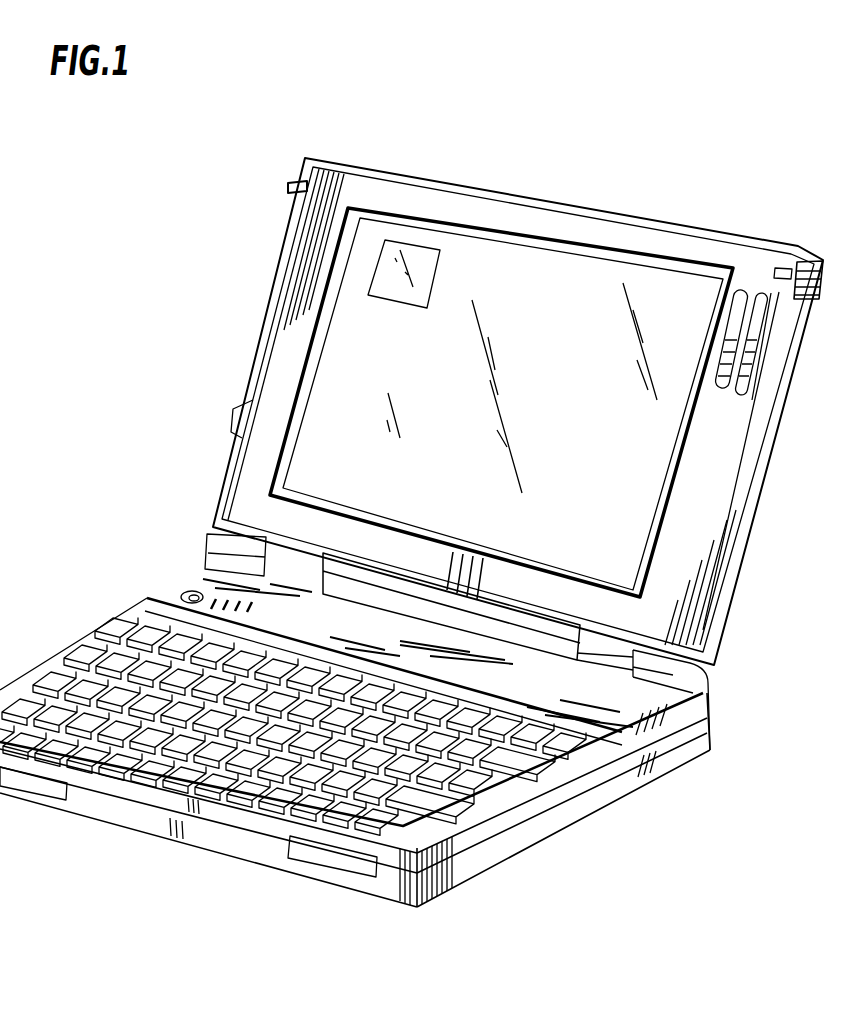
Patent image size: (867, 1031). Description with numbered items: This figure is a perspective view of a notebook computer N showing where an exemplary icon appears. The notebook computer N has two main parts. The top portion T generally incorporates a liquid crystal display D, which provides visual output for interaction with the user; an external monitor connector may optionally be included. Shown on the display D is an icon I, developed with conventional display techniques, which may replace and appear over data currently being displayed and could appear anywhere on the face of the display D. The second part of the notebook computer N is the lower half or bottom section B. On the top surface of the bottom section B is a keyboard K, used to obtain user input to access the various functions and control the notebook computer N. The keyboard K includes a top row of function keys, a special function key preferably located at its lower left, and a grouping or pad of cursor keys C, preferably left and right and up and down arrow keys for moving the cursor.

The notebook computer N is at (138, 283).
The top portion T is at (282, 247).
The liquid crystal display D is at (578, 265).
The icon I is at (410, 308).
The keyboard K is at (79, 634).
The bottom section B is at (583, 798).
The cursor keys C is at (453, 843).